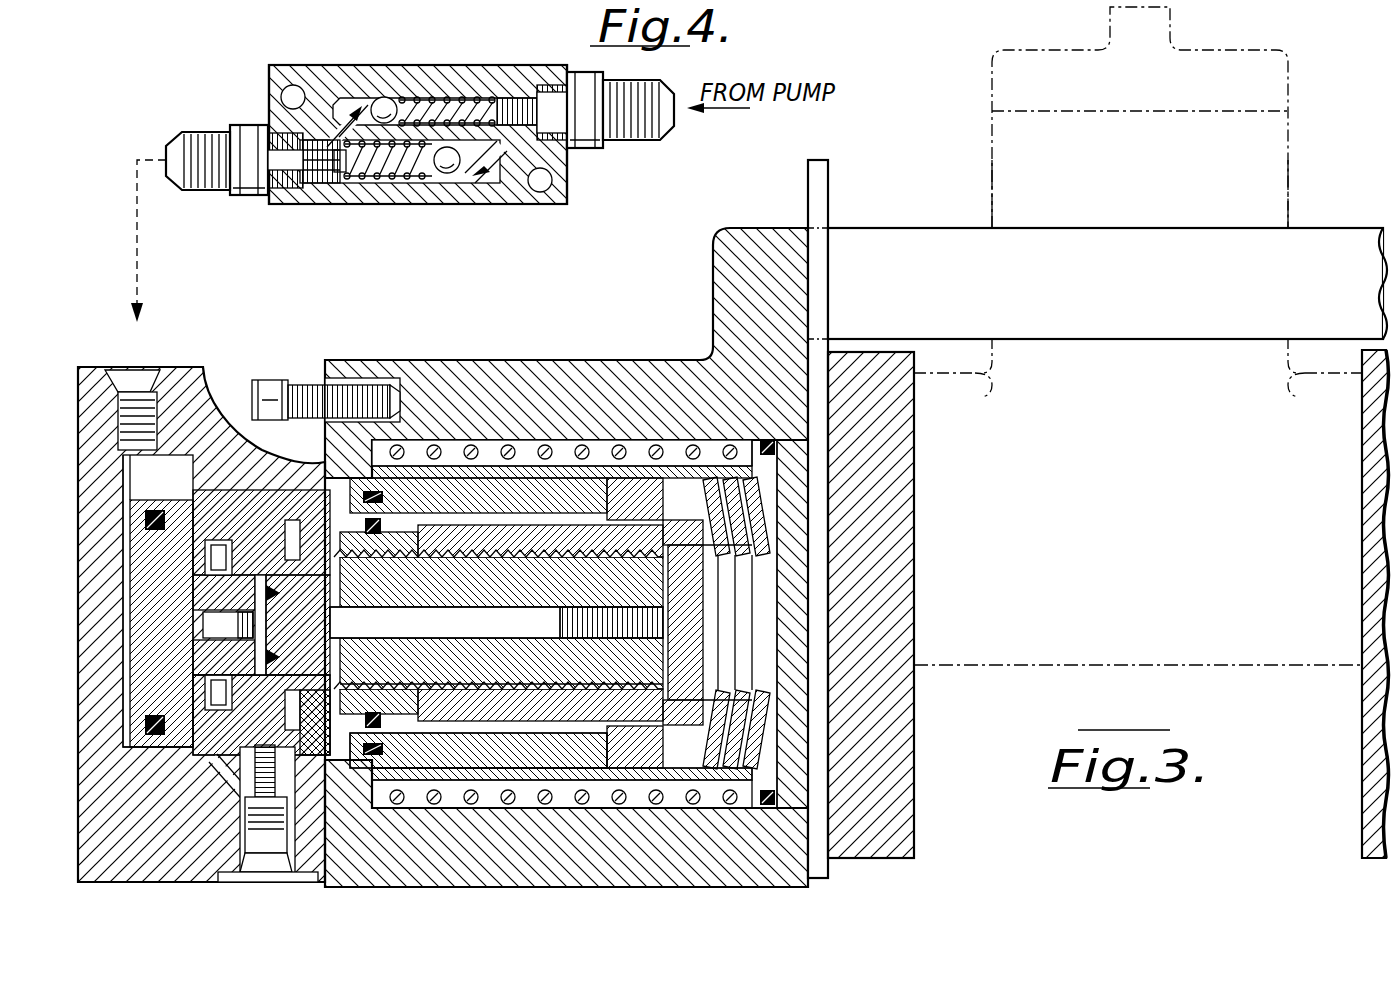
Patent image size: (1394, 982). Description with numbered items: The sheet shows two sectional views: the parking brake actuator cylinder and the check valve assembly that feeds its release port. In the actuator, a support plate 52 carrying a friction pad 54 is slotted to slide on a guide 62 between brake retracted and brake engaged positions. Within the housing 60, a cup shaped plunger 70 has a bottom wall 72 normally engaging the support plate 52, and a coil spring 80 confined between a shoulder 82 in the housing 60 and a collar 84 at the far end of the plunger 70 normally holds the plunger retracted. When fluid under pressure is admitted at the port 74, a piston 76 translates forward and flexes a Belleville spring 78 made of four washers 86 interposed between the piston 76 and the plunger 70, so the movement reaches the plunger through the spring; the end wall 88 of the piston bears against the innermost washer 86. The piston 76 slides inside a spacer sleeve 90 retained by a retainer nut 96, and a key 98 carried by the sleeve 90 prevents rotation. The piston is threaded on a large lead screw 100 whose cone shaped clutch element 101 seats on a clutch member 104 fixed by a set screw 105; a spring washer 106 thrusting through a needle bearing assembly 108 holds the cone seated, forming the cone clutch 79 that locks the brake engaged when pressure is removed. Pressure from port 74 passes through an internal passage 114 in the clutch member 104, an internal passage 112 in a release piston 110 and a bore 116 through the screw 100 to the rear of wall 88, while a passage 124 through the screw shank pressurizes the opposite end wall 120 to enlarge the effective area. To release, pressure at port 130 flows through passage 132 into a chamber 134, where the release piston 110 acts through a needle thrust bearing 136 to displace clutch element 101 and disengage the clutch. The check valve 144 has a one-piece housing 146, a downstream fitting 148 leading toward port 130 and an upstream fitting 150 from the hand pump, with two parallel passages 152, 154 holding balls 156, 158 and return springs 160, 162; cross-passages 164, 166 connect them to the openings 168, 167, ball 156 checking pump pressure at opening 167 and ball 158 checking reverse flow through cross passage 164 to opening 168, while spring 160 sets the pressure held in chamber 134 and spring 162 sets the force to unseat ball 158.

In FIG. 3, the support plate 52 is at (828, 212).
In FIG. 3, the friction pad 54 is at (914, 614).
In FIG. 3, the housing 60 is at (362, 360).
In FIG. 3, the guide 62 is at (1178, 238).
In FIG. 3, the cup shaped plunger 70 is at (682, 455).
In FIG. 3, the bottom wall 72 is at (800, 665).
In FIG. 3, the port 74 is at (270, 882).
In FIG. 3, the piston 76 is at (522, 740).
In FIG. 3, the spring 78 is at (790, 516).
In FIG. 3, the cone clutch 79 is at (248, 530).
In FIG. 3, the coil spring 80 is at (585, 446).
In FIG. 3, the shoulder 82 is at (765, 440).
In FIG. 3, the collar 84 is at (380, 445).
In FIG. 3, the washers 86 is at (766, 806).
In FIG. 3, the end wall 88 is at (690, 706).
In FIG. 3, the spacer sleeve 90 is at (636, 782).
In FIG. 3, the retainer nut 96 is at (730, 770).
In FIG. 3, the key 98 is at (612, 482).
In FIG. 3, the screw 100 is at (588, 702).
In FIG. 3, the clutch element 101 is at (296, 520).
In FIG. 3, the clutch member 104 is at (215, 505).
In FIG. 3, the set screw 105 is at (285, 778).
In FIG. 3, the spring washer 106 is at (362, 512).
In FIG. 3, the needle bearing assembly 108 is at (318, 740).
In FIG. 3, the release piston 110 is at (176, 746).
In FIG. 3, the internal passage 112 is at (204, 625).
In FIG. 3, the internal passage 114 is at (225, 748).
In FIG. 3, the bore 116 is at (496, 623).
In FIG. 3, the end wall 120 is at (362, 686).
In FIG. 3, the passage 124 is at (316, 600).
In FIG. 3, the port 130 is at (150, 390).
In FIG. 3, the passage 132 is at (134, 484).
In FIG. 3, the chamber 134 is at (172, 588).
In FIG. 3, the thrust bearing 136 is at (205, 680).
In FIG. 4, the check valve 144 is at (566, 194).
In FIG. 4, the one-piece housing 146 is at (567, 172).
In FIG. 4, the downstream fitting 148 is at (215, 135).
In FIG. 4, the upstream fitting 150 is at (640, 94).
In FIG. 4, the internal passage 152 is at (385, 185).
In FIG. 4, the internal passage 154 is at (500, 96).
In FIG. 4, the ball check 156 is at (385, 97).
In FIG. 4, the ball check 158 is at (456, 173).
In FIG. 4, the return spring 160 is at (440, 97).
In FIG. 4, the return spring 162 is at (430, 185).
In FIG. 4, the cross-passage 164 is at (500, 182).
In FIG. 4, the cross-passage 166 is at (352, 100).
In FIG. 4, the opening 167 is at (562, 88).
In FIG. 4, the opening 168 is at (312, 186).